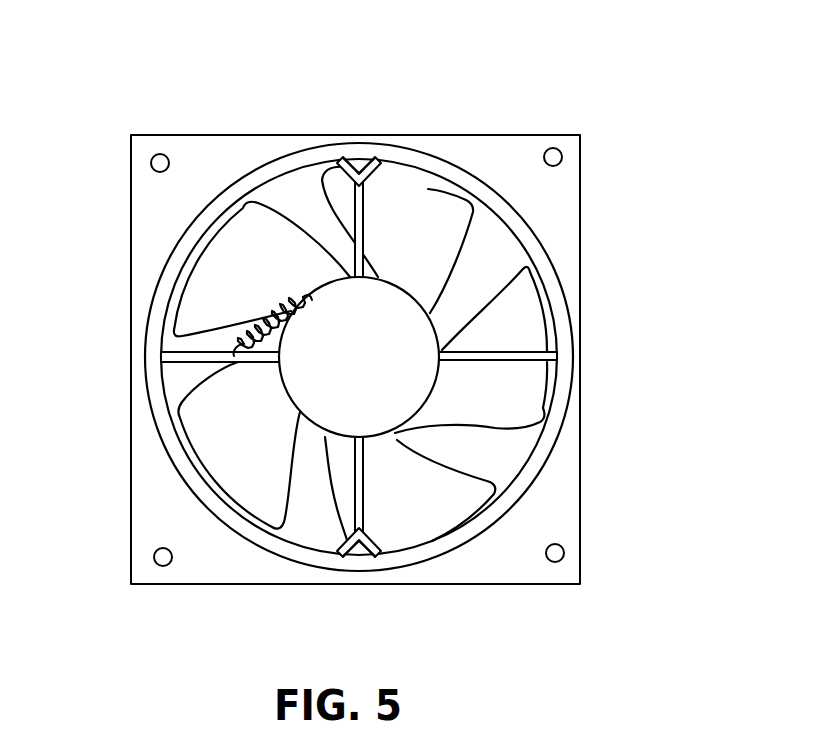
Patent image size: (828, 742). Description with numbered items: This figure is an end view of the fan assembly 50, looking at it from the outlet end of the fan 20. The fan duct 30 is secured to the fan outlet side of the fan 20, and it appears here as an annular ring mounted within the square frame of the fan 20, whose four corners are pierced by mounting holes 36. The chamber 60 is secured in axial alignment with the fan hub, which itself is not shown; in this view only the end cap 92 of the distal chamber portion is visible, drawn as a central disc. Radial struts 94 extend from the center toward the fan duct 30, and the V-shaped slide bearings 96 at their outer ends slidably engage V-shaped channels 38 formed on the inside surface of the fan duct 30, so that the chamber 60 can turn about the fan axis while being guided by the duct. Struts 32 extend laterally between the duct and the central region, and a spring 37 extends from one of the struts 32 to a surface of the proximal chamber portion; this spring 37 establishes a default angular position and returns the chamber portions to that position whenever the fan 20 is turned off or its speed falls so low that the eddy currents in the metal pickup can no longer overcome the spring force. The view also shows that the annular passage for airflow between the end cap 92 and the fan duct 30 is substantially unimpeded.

The fan assembly 50 is at (310, 309).
The fan 20 is at (516, 135).
The fan duct 30 is at (530, 234).
The struts 32 is at (210, 356).
The mounting holes 36 is at (159, 150).
The spring 37 is at (268, 307).
The V-shaped channels 38 is at (359, 150).
The chamber 60 is at (400, 400).
The end cap 92 is at (320, 334).
The radial struts 94 is at (362, 218).
The V-shaped slide bearings 96 is at (372, 173).